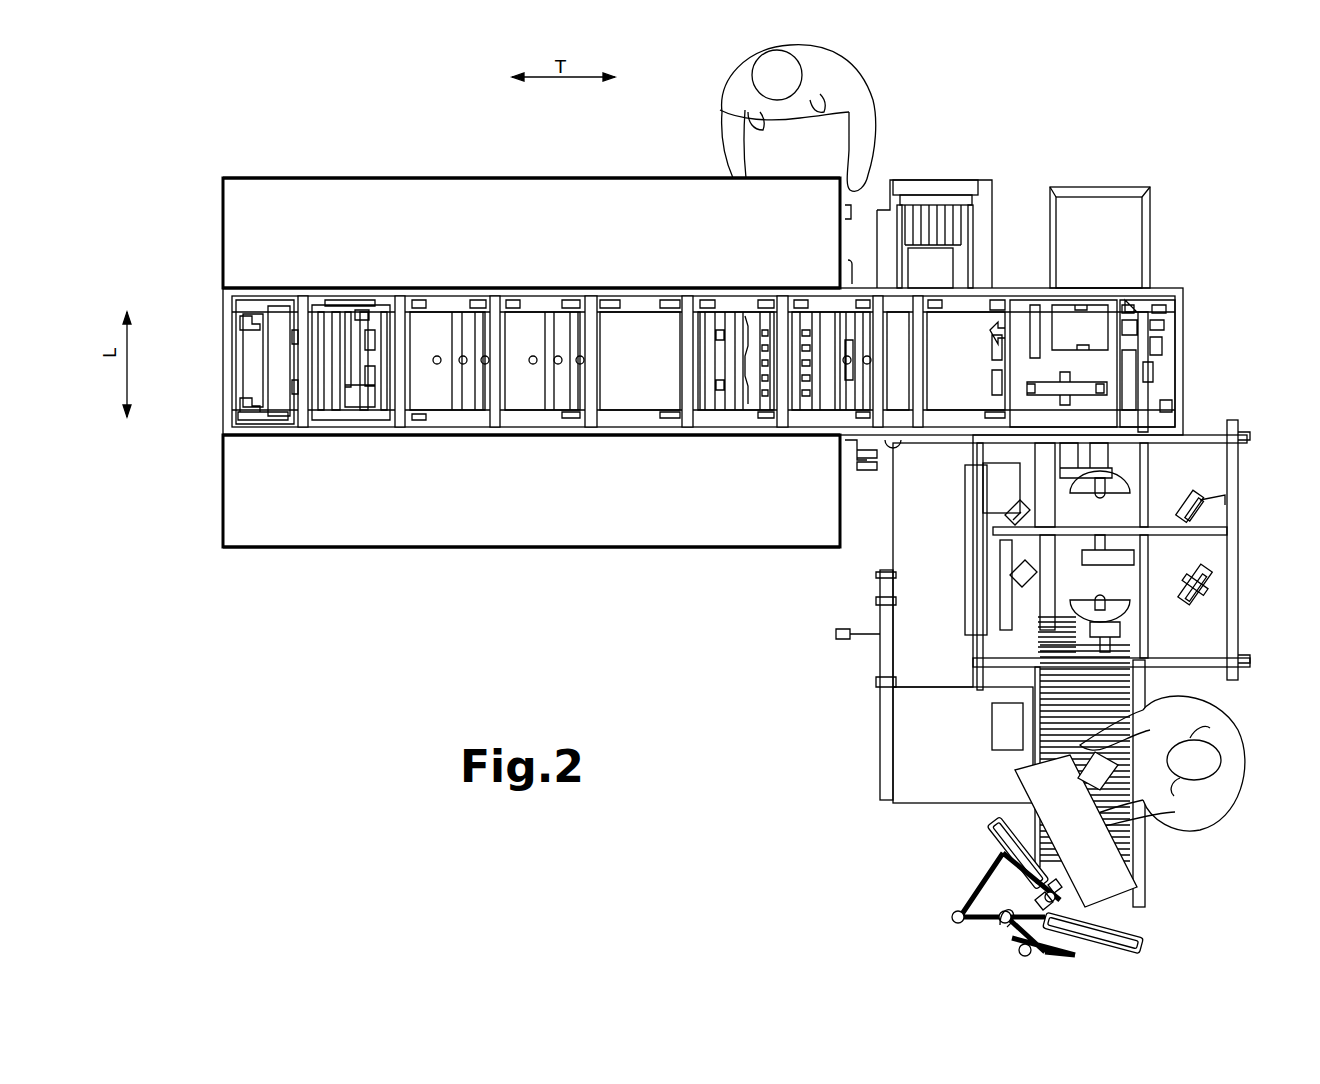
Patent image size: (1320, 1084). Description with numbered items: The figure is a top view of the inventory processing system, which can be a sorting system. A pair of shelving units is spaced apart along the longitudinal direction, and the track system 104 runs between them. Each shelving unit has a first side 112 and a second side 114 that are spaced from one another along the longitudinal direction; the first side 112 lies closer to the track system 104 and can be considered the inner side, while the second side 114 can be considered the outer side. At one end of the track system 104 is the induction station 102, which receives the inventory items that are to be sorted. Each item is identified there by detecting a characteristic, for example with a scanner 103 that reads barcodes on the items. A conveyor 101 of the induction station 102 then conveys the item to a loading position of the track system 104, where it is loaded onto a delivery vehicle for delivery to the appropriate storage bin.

The conveyor 101 is at (1143, 872).
The induction station 102 is at (1145, 912).
The scanner 103 is at (1182, 625).
The track system 104 is at (1207, 356).
The first side 112 is at (348, 288).
The second side 114 is at (358, 176).